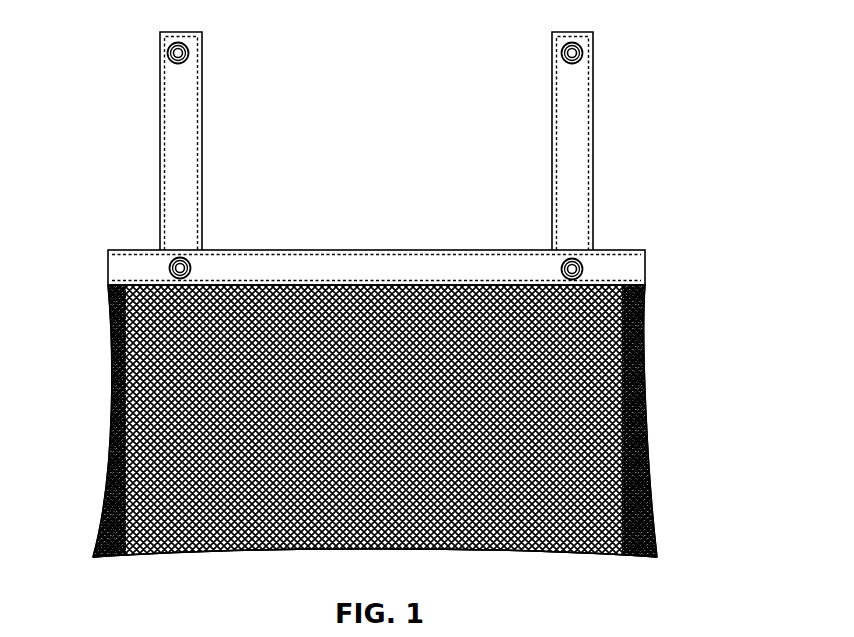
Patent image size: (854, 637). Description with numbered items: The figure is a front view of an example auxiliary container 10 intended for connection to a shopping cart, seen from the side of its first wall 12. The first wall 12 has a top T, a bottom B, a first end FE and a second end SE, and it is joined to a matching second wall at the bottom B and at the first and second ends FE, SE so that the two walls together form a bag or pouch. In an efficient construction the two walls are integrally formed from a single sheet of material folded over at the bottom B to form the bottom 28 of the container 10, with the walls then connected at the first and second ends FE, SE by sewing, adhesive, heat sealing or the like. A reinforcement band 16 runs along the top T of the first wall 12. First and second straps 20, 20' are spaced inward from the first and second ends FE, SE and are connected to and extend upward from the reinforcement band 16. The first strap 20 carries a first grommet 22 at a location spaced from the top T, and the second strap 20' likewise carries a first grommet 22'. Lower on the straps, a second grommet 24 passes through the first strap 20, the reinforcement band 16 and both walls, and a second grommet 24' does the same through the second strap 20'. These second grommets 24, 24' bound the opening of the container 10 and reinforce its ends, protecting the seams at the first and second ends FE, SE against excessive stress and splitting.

The auxiliary container 10 is at (419, 313).
The first wall 12 is at (377, 440).
The reinforcement band 16 is at (396, 243).
The first strap 20 is at (602, 141).
The second strap 20' is at (145, 141).
The first grommet 22 is at (604, 59).
The first grommet 22' is at (142, 60).
The second grommet 24 is at (625, 240).
The second grommet 24' is at (128, 242).
The bottom 28 is at (243, 549).
The second end SE is at (108, 462).
The first end FE is at (648, 466).
The top T is at (647, 291).
The bottom B is at (589, 548).